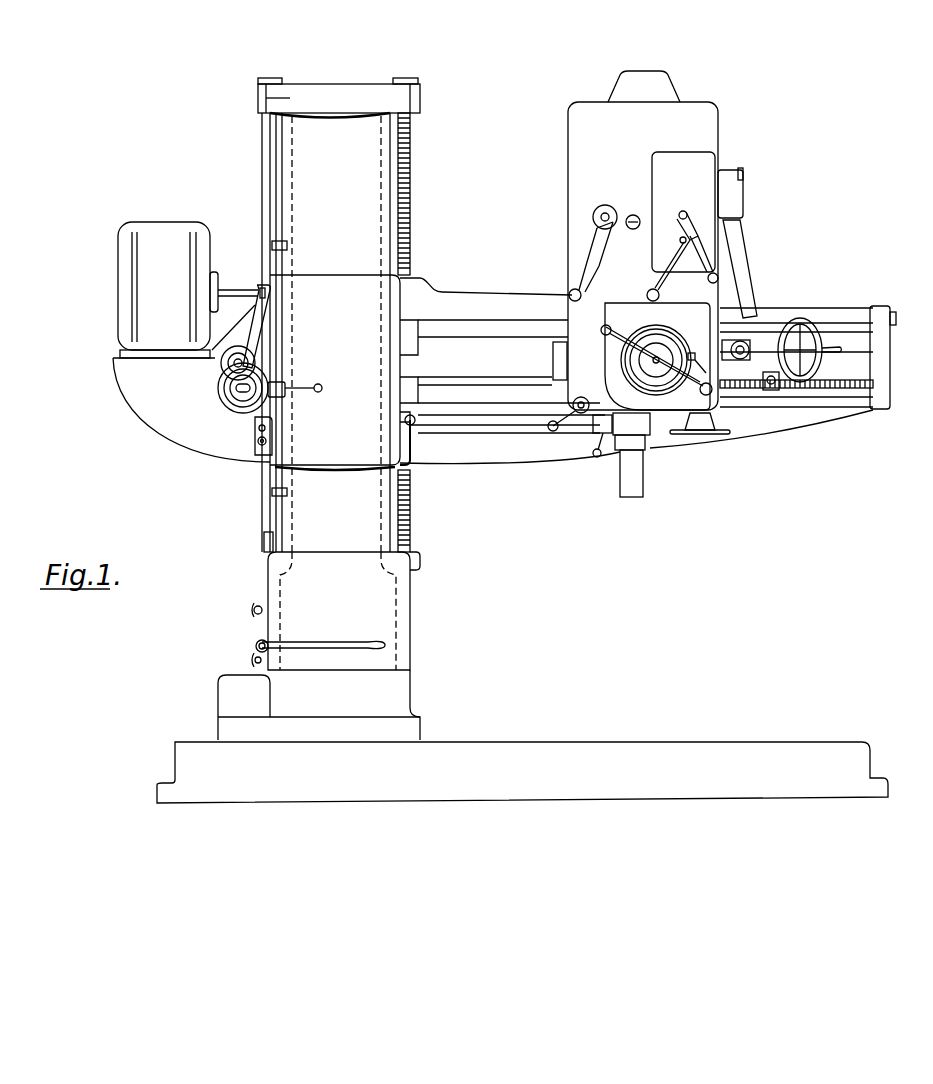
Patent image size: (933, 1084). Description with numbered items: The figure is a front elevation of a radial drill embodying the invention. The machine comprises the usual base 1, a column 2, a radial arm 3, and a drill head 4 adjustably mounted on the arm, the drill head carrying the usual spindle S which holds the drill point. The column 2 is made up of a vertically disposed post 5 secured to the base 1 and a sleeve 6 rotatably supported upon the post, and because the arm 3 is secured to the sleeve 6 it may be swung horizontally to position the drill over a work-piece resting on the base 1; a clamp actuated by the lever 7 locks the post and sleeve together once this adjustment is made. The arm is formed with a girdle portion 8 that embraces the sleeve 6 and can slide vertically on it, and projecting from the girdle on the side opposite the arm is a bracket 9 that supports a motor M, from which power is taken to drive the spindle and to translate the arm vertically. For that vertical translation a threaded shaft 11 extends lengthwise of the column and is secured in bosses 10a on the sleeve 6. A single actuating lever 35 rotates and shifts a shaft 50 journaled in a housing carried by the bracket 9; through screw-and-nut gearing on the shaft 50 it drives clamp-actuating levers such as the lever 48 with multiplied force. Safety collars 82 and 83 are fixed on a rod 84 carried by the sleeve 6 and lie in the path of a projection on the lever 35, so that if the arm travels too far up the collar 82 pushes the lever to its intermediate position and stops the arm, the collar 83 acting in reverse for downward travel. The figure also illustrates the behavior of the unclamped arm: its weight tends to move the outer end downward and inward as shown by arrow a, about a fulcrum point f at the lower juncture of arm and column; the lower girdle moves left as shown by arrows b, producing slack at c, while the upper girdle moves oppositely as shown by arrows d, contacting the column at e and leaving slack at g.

The base 1 is at (575, 740).
The column 2 is at (418, 660).
The radial arm 3 is at (493, 292).
The drill head 4 is at (572, 190).
The post 5 is at (420, 698).
The sleeve 6 is at (390, 522).
The lever 7 is at (323, 645).
The girdle portion 8 is at (321, 281).
The bracket 9 is at (192, 383).
The bosses 10a is at (420, 110).
The threaded shaft 11 is at (410, 233).
The actuating lever 35 is at (315, 386).
The lever 48 is at (258, 340).
The shaft 50 is at (245, 393).
The collar 82 is at (287, 244).
The collar 83 is at (272, 492).
The rod 84 is at (282, 200).
The motor M is at (188, 290).
The spindle S is at (641, 478).
The arrow a is at (872, 472).
The arrows b is at (305, 479).
The slack point c is at (268, 461).
The arrows d is at (258, 280).
The contact point e is at (283, 277).
The fulcrum point f is at (382, 464).
The slack point g is at (388, 279).